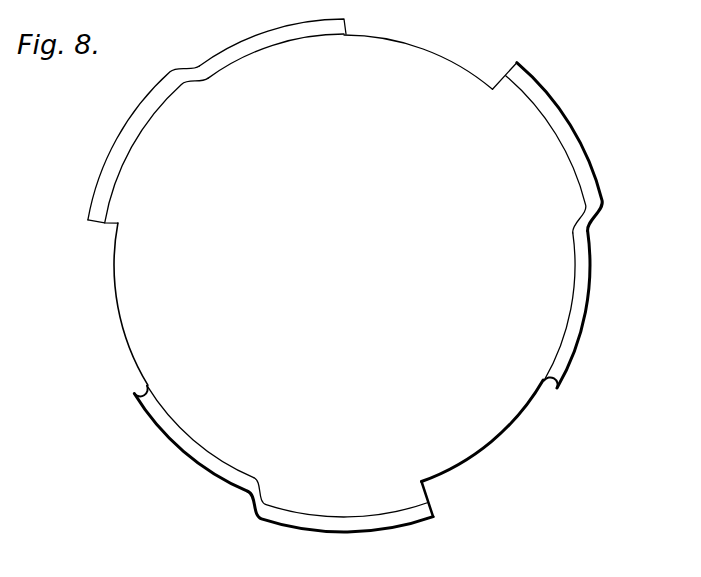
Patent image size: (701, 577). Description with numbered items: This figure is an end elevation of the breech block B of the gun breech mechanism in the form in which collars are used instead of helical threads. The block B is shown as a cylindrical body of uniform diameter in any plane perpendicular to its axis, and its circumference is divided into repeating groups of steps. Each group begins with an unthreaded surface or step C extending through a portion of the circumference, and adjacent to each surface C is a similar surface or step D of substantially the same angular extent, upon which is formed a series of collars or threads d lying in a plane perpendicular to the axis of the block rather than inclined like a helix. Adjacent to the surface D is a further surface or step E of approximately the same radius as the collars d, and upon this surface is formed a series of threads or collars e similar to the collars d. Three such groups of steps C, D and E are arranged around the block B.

The breech block B is at (311, 246).
The unthreaded surface C is at (428, 47).
The surface or step D is at (374, 245).
The surface or step E is at (346, 313).
The collars or threads d is at (268, 27).
The threads or collars e is at (147, 98).